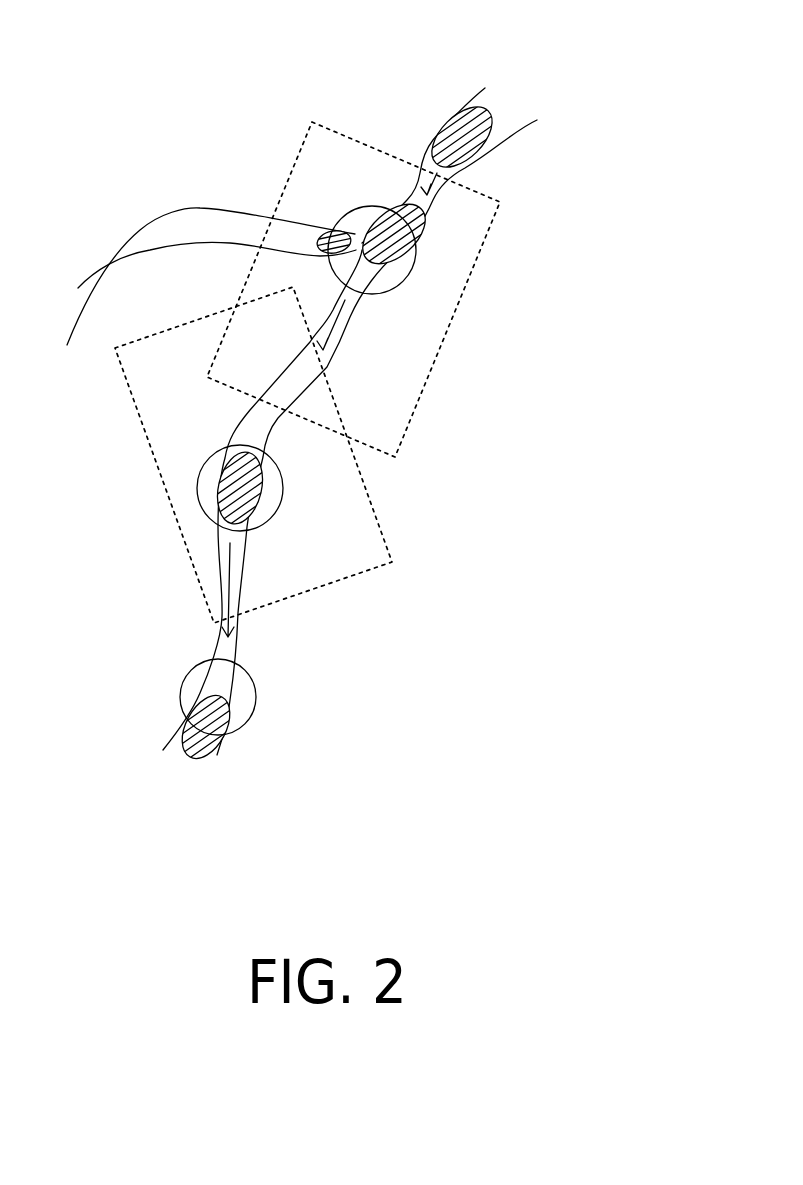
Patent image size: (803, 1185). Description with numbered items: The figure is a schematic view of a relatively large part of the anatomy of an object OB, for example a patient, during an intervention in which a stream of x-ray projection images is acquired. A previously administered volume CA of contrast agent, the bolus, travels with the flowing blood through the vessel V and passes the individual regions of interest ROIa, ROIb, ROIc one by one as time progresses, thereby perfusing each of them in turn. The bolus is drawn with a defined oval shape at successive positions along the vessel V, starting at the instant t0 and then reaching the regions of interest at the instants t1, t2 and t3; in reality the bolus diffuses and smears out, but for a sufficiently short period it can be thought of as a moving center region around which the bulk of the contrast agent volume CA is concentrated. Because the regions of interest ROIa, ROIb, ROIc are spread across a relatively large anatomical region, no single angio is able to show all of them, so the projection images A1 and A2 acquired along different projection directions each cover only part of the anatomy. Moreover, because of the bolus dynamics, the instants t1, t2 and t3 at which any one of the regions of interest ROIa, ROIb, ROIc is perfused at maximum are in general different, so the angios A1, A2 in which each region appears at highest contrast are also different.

The vessel V is at (220, 208).
The volume of contrast agent CA is at (457, 113).
The region of interest a ROIa is at (405, 283).
The region of interest b ROIb is at (277, 500).
The region of interest c ROIc is at (247, 697).
The projection image A1 is at (435, 363).
The projection image A2 is at (387, 538).
The object OB is at (552, 627).
The time instant t0 is at (476, 175).
The time instant t1 is at (380, 298).
The time instant t2 is at (262, 534).
The time instant t3 is at (262, 688).